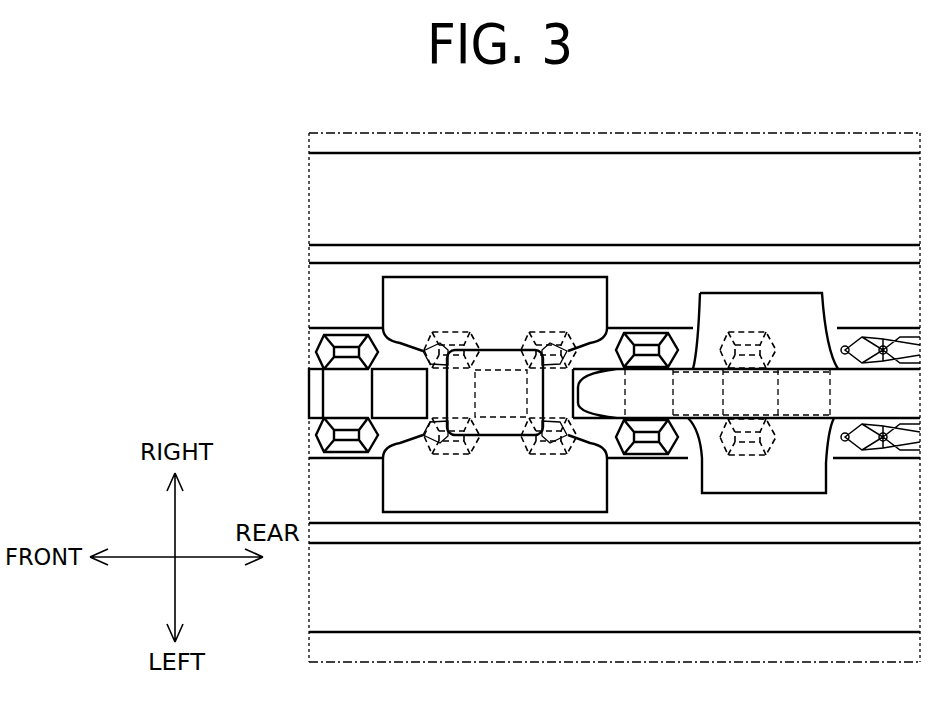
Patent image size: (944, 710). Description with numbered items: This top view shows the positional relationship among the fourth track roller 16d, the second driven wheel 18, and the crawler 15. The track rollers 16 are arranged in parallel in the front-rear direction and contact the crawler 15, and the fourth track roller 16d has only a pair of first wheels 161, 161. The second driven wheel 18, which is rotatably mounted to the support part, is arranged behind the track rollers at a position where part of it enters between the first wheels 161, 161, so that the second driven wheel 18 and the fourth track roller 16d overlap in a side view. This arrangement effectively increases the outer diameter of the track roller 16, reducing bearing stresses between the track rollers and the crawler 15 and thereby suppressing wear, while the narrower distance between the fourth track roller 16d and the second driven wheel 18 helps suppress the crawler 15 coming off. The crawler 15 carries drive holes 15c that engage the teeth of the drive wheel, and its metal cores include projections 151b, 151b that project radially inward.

The crawler 15 is at (798, 612).
The drive hole 15c is at (395, 378).
The projection 151b is at (314, 437).
The track roller 16 is at (634, 215).
The fourth track roller 16d is at (619, 285).
The first wheel 161 is at (597, 498).
The second driven wheel 18 is at (803, 492).